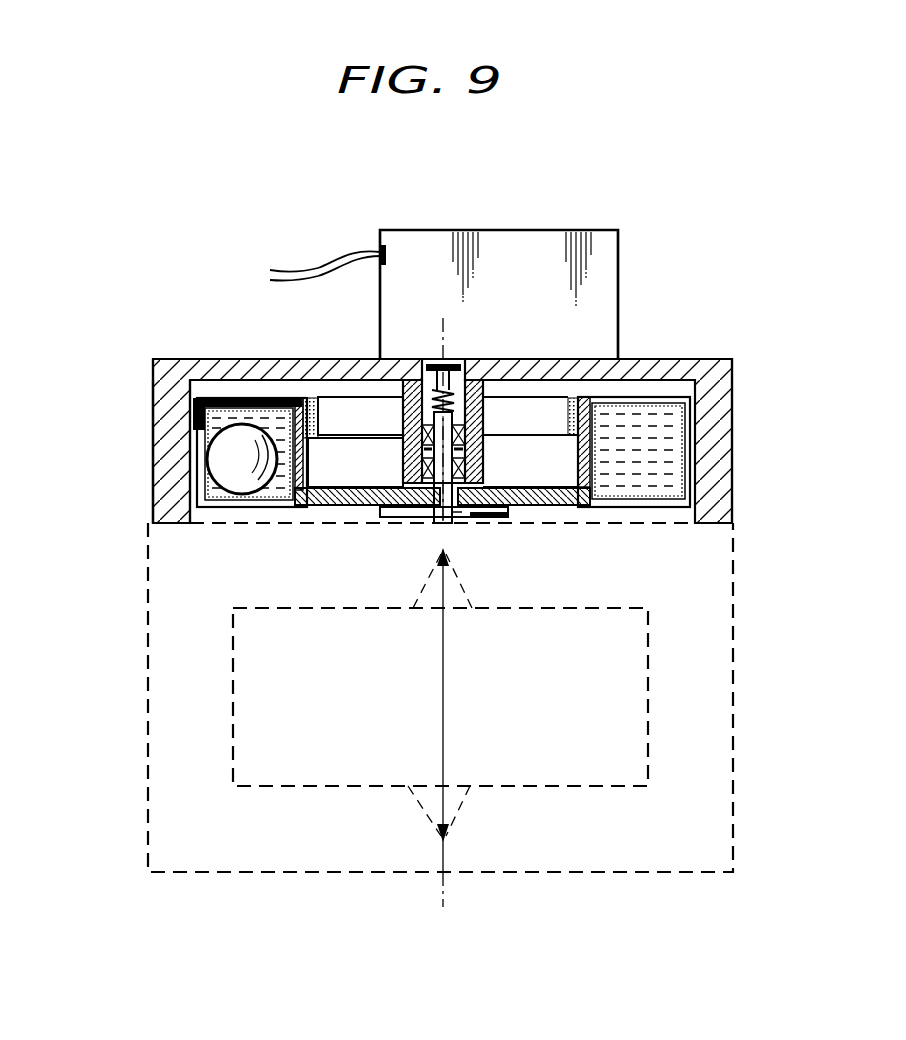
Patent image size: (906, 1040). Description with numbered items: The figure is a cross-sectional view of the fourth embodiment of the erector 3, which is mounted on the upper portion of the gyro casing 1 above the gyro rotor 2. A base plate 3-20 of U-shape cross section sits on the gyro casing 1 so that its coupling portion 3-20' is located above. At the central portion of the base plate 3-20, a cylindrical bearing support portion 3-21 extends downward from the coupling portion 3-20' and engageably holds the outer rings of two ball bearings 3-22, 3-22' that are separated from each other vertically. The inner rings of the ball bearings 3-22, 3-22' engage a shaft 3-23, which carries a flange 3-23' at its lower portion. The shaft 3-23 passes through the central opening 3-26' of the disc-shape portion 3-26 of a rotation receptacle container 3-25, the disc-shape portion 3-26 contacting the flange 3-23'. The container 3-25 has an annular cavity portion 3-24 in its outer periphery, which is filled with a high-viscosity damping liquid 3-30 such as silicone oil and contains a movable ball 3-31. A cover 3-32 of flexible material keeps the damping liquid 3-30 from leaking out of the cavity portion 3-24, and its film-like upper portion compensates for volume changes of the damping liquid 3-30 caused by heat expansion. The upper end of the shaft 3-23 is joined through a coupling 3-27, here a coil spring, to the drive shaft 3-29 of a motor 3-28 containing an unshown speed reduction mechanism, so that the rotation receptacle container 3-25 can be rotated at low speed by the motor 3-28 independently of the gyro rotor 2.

The gyro casing 1 is at (288, 873).
The gyro rotor 2 is at (233, 730).
The erector 3 is at (654, 313).
The base plate 3-20 is at (475, 435).
The coupling portion 3-20' is at (287, 348).
The cylindrical bearing support portion 3-21 is at (483, 465).
The ball bearing 3-22 is at (353, 417).
The ball bearing 3-22' is at (356, 462).
The shaft 3-23 is at (439, 536).
The flange 3-23' is at (508, 543).
The annular cavity portion 3-24 is at (268, 506).
The rotation receptacle container 3-25 is at (316, 506).
The disc-shape portion 3-26 is at (549, 524).
The central opening 3-26' is at (486, 564).
The coupling 3-27 is at (397, 377).
The motor 3-28 is at (585, 244).
The drive shaft 3-29 is at (458, 386).
The damping liquid 3-30 is at (668, 470).
The ball 3-31 is at (223, 471).
The cover 3-32 is at (190, 378).